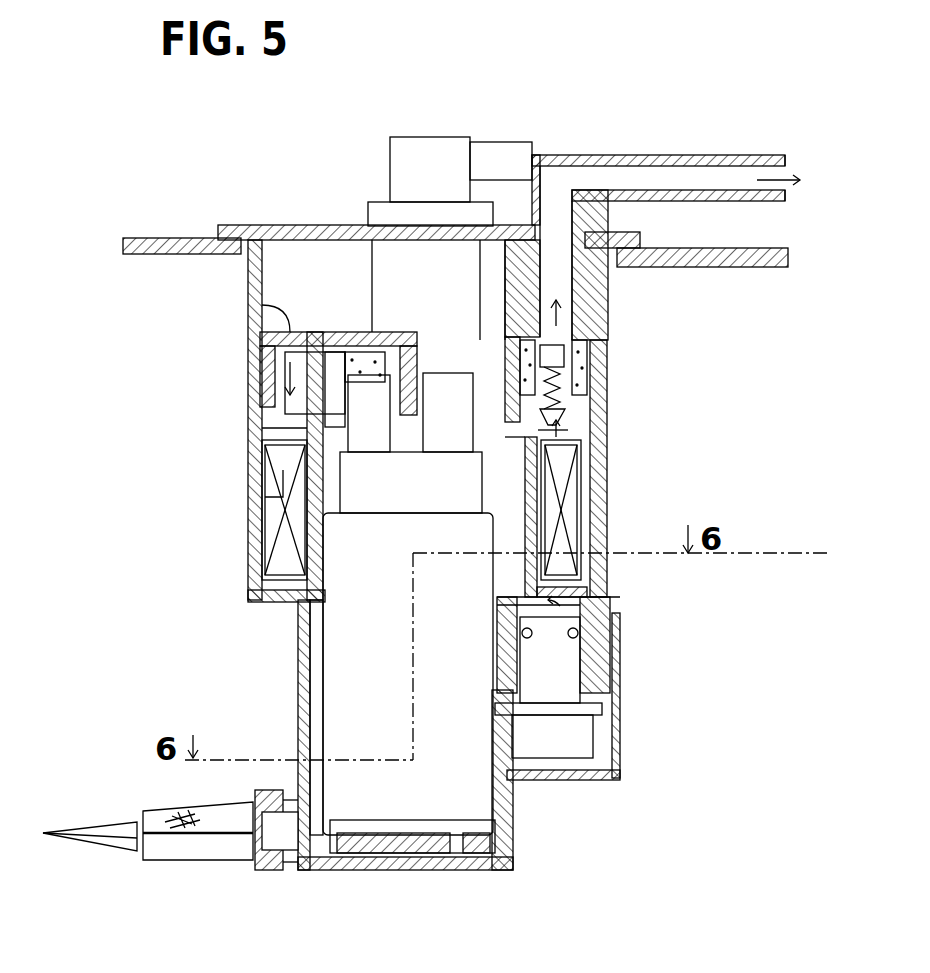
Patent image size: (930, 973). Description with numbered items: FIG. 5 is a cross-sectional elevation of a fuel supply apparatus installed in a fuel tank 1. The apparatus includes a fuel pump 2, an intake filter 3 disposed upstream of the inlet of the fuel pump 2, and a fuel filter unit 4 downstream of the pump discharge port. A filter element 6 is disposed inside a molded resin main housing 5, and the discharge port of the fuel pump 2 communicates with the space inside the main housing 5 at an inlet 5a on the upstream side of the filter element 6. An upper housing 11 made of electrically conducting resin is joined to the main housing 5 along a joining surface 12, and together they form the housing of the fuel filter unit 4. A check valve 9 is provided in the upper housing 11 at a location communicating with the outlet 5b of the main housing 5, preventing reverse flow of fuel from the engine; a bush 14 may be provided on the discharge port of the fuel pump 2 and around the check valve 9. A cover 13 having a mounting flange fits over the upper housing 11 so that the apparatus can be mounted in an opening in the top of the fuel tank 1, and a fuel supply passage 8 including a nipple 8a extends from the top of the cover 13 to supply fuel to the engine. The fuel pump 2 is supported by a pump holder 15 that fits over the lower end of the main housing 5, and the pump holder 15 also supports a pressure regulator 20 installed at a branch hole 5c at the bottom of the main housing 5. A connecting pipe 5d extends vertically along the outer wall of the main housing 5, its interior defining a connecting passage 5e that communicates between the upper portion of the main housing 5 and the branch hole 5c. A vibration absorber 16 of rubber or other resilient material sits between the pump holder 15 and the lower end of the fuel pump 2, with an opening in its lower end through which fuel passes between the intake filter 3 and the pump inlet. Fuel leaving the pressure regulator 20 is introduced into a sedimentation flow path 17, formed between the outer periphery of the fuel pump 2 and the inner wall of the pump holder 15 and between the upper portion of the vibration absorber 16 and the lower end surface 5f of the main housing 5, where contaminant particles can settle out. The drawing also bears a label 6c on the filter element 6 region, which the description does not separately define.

The fuel tank 1 is at (183, 237).
The fuel pump 2 is at (347, 638).
The intake filter 3 is at (190, 862).
The fuel filter unit 4 is at (607, 572).
The main housing 5 is at (250, 467).
The inlet 5a is at (280, 372).
The outlet 5b is at (562, 430).
The branch hole 5c is at (568, 598).
The connecting pipe 5d is at (575, 510).
The connecting passage 5e is at (590, 480).
The lower end surface 5f is at (310, 687).
The filter element 6 is at (280, 520).
The filter end portion 6c is at (262, 552).
The fuel supply passage 8 is at (562, 185).
The nipple 8a is at (752, 158).
The check valve 9 is at (556, 398).
The upper housing 11 is at (262, 312).
The joining surface 12 is at (300, 412).
The cover 13 is at (272, 232).
The bush 14 is at (352, 360).
The pump holder 15 is at (620, 772).
The vibration absorber 16 is at (505, 840).
The sedimentation flow path 17 is at (310, 703).
The pressure regulator 20 is at (575, 735).